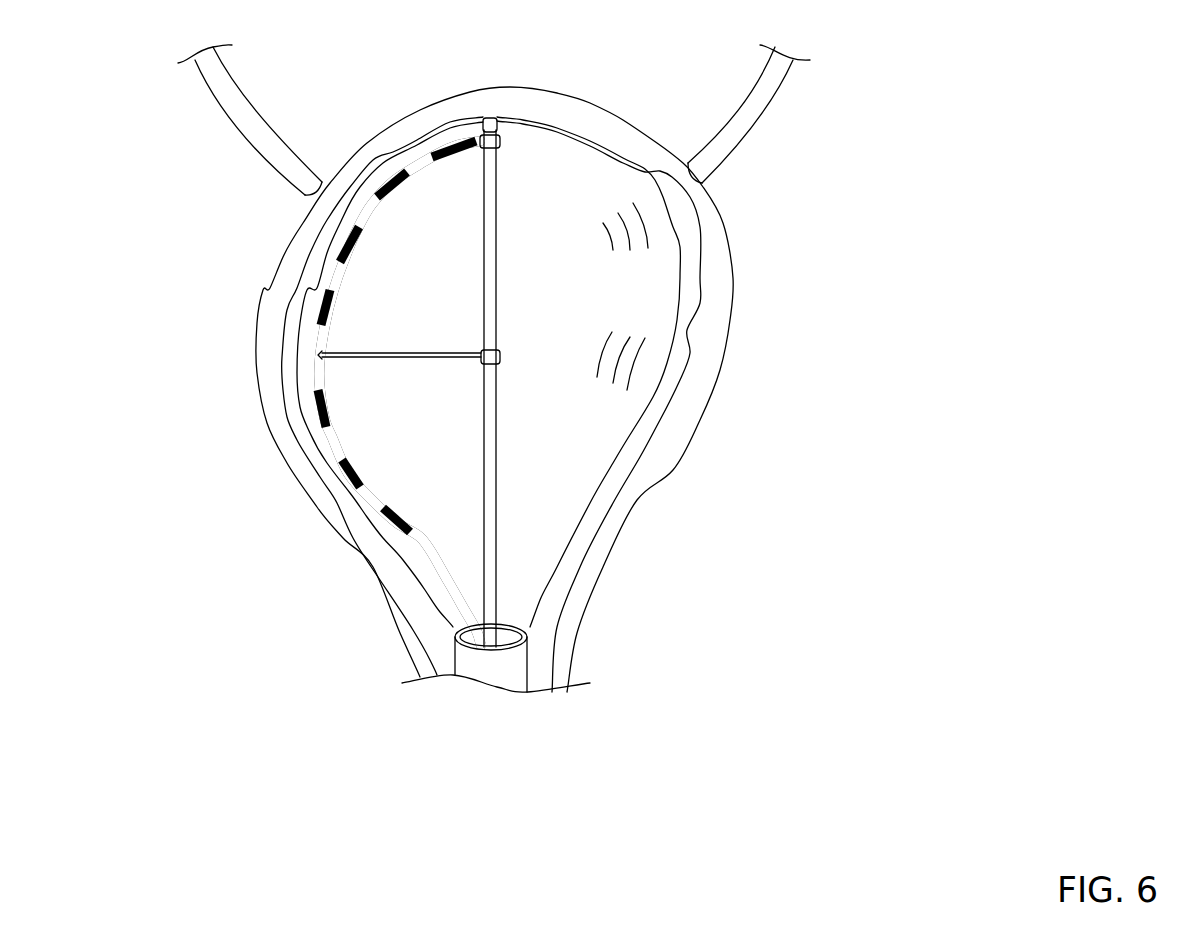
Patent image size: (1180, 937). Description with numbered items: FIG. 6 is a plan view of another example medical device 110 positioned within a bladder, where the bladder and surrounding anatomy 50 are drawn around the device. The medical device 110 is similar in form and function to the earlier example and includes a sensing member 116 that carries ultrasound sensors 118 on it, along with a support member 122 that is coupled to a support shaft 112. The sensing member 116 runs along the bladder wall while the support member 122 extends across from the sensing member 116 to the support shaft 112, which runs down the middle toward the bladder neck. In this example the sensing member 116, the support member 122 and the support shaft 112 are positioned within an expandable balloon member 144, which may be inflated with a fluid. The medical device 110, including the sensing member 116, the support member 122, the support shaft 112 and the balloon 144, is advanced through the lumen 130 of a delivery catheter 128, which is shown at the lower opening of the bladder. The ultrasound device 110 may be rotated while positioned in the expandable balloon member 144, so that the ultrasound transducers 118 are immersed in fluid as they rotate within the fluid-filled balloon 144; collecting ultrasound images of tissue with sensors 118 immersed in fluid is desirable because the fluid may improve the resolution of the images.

The urinary bladder 50 is at (817, 238).
The medical device 110 is at (593, 515).
The support shaft 112 is at (511, 453).
The sensing member 116 is at (318, 262).
The ultrasound sensors 118 is at (395, 178).
The support member 122 is at (355, 363).
The delivery catheter 128 is at (513, 667).
The lumen 130 is at (510, 630).
The expandable balloon member 144 is at (655, 313).